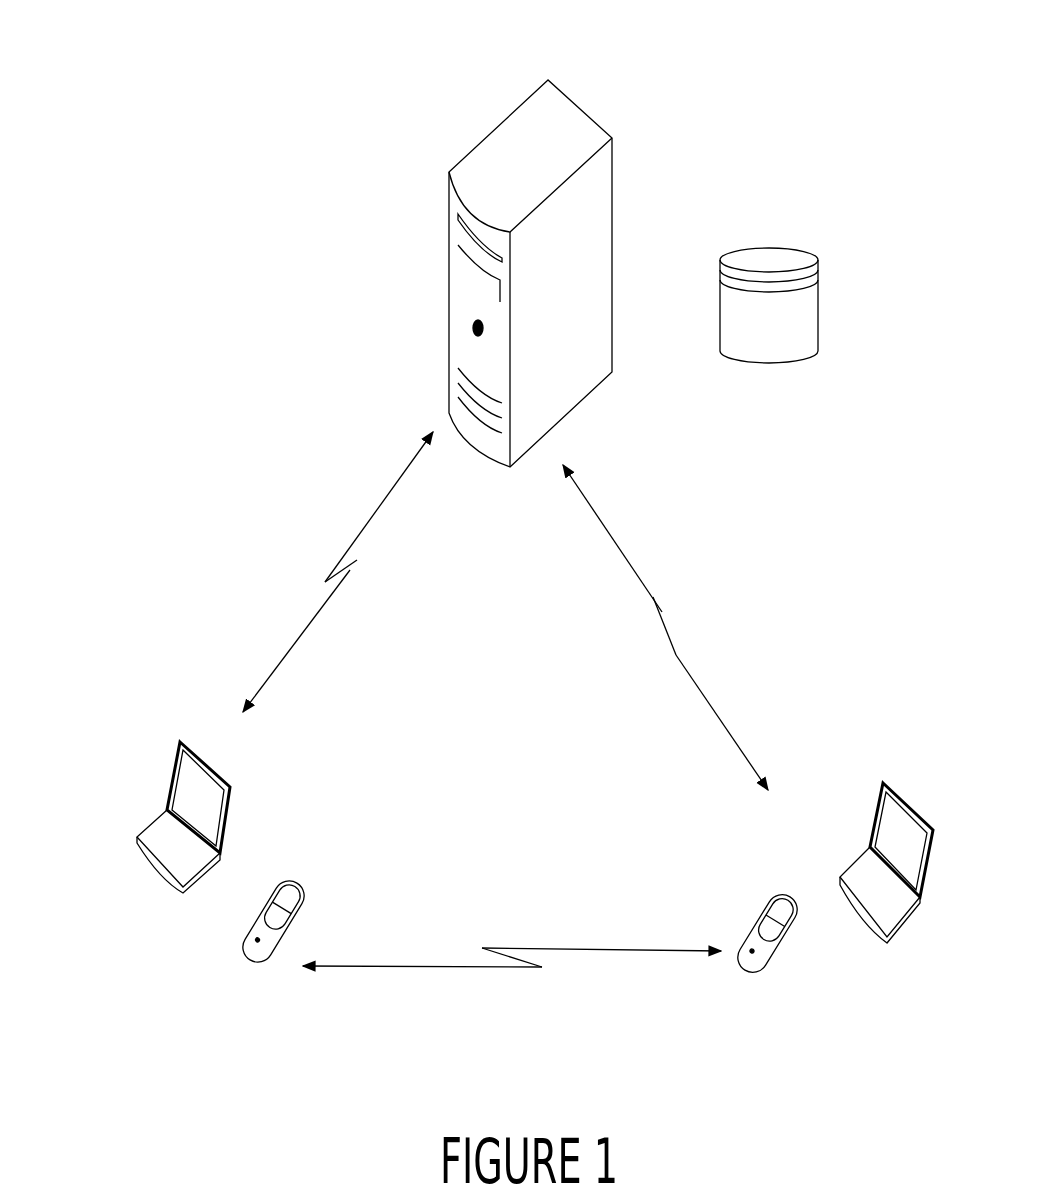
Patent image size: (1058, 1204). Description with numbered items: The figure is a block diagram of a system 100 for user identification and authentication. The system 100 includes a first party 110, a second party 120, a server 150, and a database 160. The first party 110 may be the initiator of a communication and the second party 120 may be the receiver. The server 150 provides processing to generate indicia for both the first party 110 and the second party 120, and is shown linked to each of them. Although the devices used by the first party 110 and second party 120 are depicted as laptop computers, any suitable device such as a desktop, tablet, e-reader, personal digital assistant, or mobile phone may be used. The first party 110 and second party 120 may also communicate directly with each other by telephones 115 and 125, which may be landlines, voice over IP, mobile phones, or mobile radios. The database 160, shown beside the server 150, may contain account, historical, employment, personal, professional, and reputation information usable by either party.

The system 100 is at (140, 66).
The first party 110 is at (183, 853).
The telephone 115 is at (273, 939).
The second party 120 is at (891, 896).
The telephone 125 is at (767, 954).
The server 150 is at (530, 312).
The database 160 is at (754, 338).